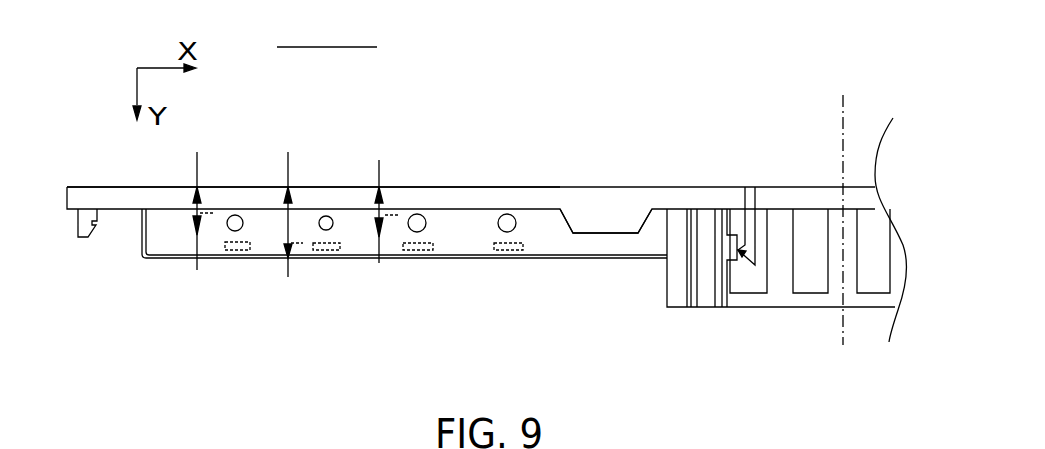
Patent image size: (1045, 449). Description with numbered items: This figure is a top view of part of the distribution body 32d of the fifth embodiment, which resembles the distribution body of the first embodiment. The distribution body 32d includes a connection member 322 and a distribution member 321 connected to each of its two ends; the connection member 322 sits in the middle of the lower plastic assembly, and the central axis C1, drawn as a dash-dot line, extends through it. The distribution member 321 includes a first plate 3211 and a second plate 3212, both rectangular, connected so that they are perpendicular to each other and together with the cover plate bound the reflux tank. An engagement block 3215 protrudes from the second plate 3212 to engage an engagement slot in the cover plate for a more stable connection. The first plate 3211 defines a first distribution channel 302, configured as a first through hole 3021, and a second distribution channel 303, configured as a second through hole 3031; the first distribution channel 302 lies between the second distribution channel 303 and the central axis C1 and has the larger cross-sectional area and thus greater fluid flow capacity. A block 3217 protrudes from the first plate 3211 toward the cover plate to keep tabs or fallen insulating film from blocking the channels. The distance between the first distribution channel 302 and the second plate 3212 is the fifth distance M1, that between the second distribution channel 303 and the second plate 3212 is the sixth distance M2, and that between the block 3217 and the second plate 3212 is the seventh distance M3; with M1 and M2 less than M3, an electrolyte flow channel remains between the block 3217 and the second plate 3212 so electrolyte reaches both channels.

The distribution member 321 is at (465, 271).
The first plate 3211 is at (177, 242).
The second plate 3212 is at (143, 200).
The engagement block 3215 is at (585, 218).
The block 3217 is at (415, 251).
The first distribution channel 302 is at (437, 175).
The first through hole 3021 is at (507, 214).
The second distribution channel 303 is at (144, 280).
The second through hole 3031 is at (234, 231).
The connection member 322 is at (795, 200).
The distribution body 32d is at (327, 31).
The central axis C1 is at (845, 136).
The fifth distance M1 is at (399, 210).
The sixth distance M2 is at (216, 211).
The seventh distance M3 is at (308, 214).